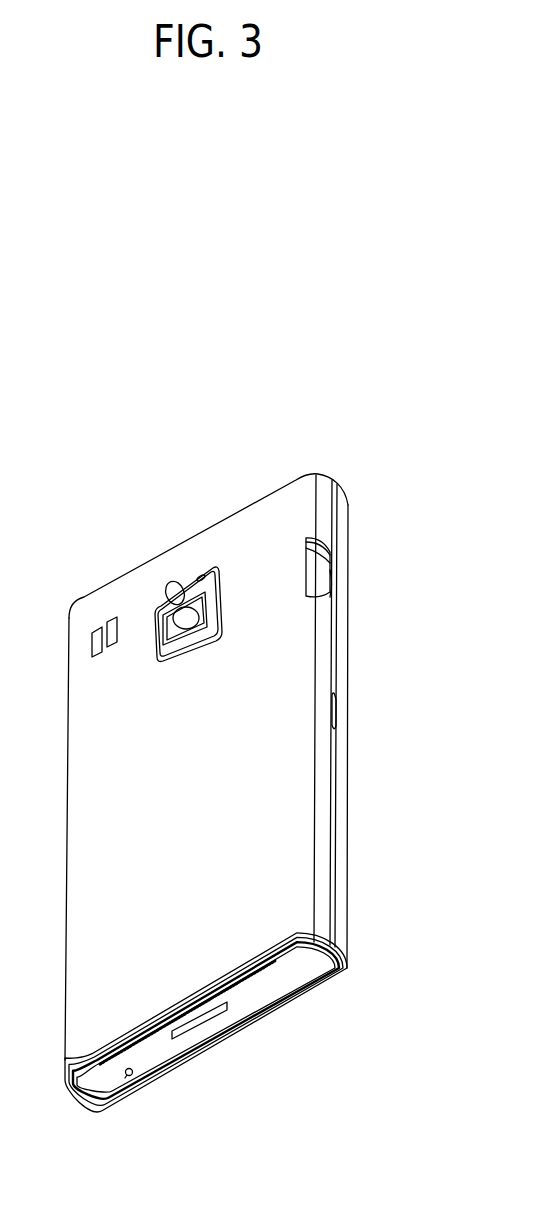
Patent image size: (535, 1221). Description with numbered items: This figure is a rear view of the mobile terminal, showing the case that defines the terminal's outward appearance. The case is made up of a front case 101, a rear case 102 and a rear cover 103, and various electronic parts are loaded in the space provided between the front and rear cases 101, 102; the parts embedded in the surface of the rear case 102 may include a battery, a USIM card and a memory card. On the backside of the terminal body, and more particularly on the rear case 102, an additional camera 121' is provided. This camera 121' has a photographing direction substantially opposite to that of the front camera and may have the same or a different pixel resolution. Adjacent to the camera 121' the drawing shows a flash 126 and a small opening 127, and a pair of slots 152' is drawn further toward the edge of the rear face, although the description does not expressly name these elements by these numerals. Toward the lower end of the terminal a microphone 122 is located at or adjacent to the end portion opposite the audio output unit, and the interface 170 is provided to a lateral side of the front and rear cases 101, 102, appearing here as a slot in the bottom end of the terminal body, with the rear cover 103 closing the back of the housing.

The front case 101 is at (343, 967).
The rear case 102 is at (337, 951).
The rear cover 103 is at (288, 942).
The additional camera 121' is at (188, 564).
The microphone 122 is at (129, 1077).
The flash 126 is at (166, 594).
The second microphone hole 127 is at (205, 578).
The second audio output module 152' is at (79, 593).
The interface 170 is at (199, 1022).